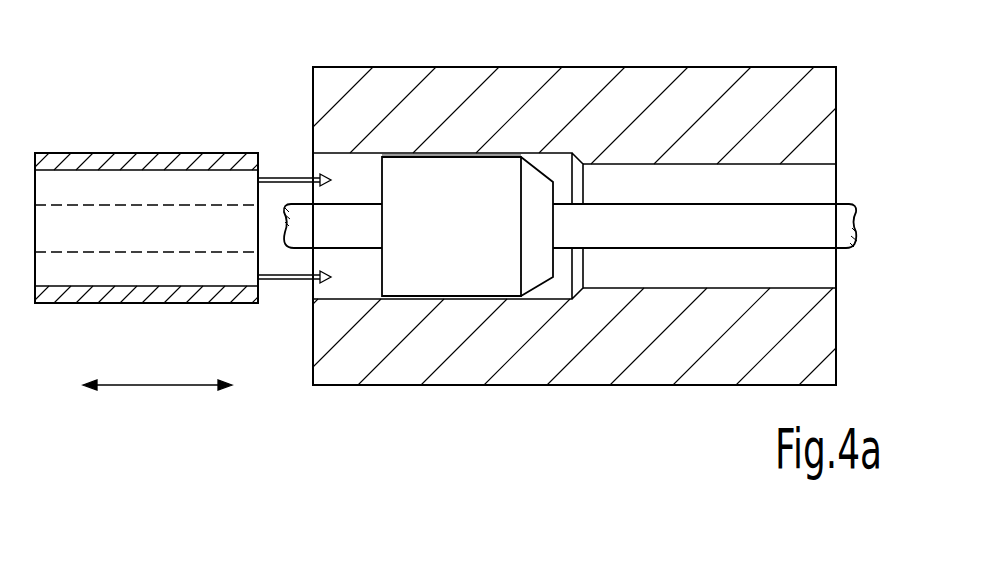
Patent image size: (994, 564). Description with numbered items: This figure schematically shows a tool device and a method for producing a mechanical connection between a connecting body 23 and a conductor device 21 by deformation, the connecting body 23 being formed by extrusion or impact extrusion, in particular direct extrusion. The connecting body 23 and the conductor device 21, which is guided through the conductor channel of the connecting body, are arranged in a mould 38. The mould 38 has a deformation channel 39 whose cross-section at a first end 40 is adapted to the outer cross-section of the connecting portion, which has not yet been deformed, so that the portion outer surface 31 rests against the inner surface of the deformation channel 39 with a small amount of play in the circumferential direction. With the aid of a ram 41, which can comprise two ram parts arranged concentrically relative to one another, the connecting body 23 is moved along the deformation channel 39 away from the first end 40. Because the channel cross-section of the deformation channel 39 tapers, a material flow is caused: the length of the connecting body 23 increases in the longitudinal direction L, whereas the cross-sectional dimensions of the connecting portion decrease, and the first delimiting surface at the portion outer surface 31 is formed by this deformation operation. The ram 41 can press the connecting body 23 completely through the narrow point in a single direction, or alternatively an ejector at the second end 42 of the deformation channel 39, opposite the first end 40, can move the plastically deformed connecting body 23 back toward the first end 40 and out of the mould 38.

The conductor device 21 is at (840, 217).
The connecting body 23 is at (482, 283).
The portion outer surface 31 is at (462, 150).
The mould 38 is at (767, 87).
The deformation channel 39 is at (656, 168).
The first end 40 is at (313, 157).
The ram 41 is at (158, 153).
The second end 42 is at (838, 257).
The longitudinal direction L is at (143, 385).